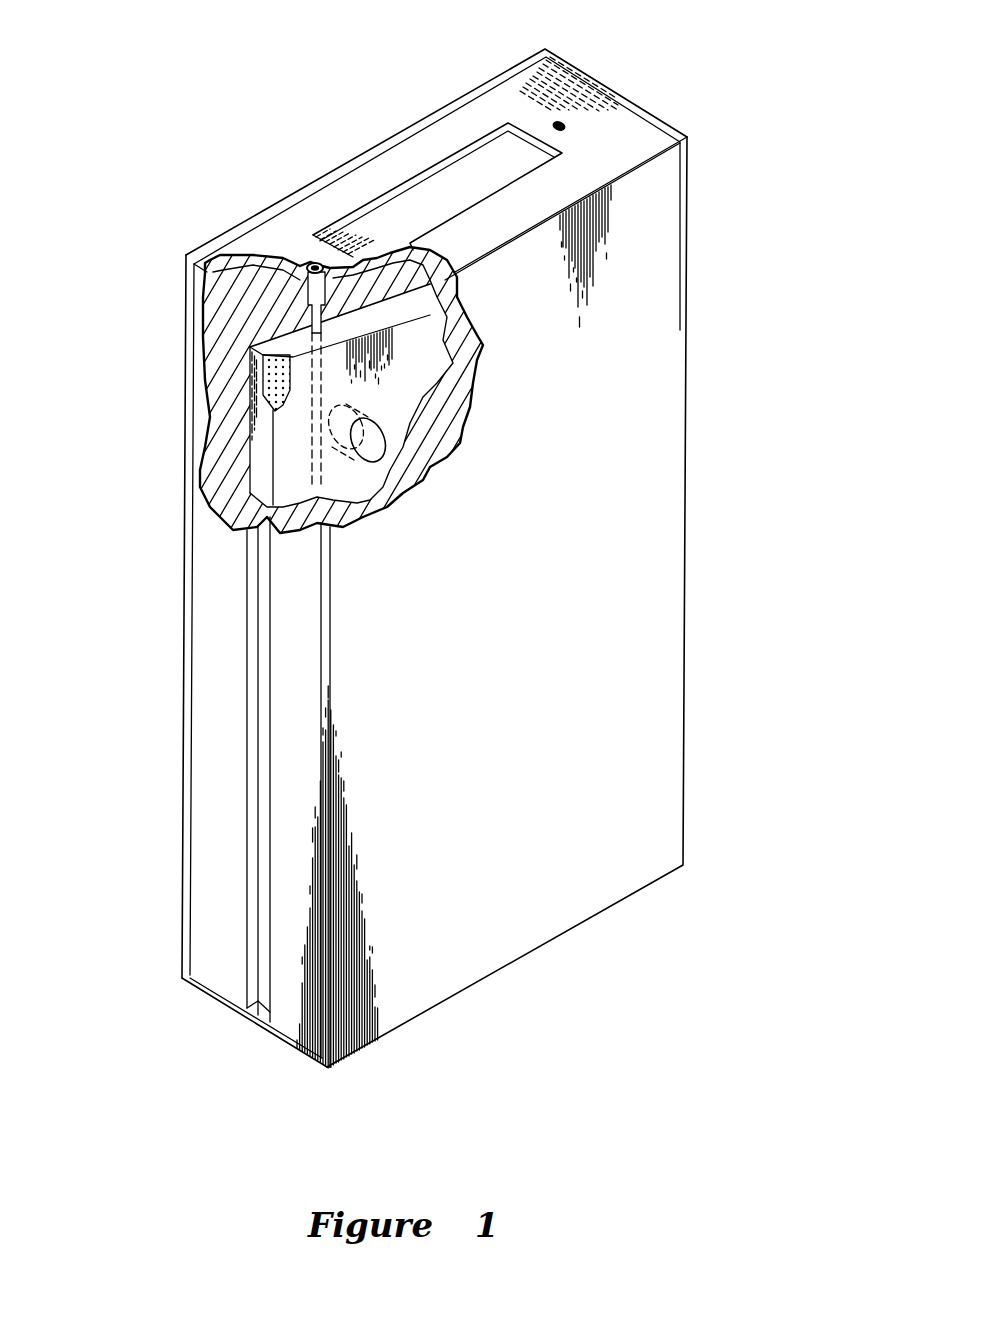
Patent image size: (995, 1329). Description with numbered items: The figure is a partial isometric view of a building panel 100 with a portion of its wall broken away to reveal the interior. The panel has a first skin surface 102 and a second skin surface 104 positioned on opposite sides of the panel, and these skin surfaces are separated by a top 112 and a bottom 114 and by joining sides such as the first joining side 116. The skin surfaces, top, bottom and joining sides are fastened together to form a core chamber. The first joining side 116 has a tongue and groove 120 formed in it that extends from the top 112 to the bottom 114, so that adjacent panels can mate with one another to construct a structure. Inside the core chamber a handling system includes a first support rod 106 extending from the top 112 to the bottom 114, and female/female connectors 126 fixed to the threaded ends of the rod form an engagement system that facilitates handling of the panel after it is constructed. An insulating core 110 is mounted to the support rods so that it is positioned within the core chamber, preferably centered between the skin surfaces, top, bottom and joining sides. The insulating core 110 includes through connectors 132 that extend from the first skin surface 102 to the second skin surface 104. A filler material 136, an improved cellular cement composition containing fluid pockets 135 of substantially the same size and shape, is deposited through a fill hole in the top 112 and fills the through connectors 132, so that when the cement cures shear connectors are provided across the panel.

The building panel 100 is at (718, 490).
The first skin surface 102 is at (668, 672).
The second skin surface 104 is at (243, 225).
The first support rod 106 is at (248, 448).
The insulating core 110 is at (258, 350).
The top 112 is at (492, 95).
The bottom 114 is at (295, 1052).
The first joining side 116 is at (213, 940).
The tongue and groove 120 is at (250, 967).
The female/female connector 126 is at (305, 258).
The through connector 132 is at (371, 458).
The fluid pockets 135 is at (310, 410).
The filler material 136 is at (235, 305).